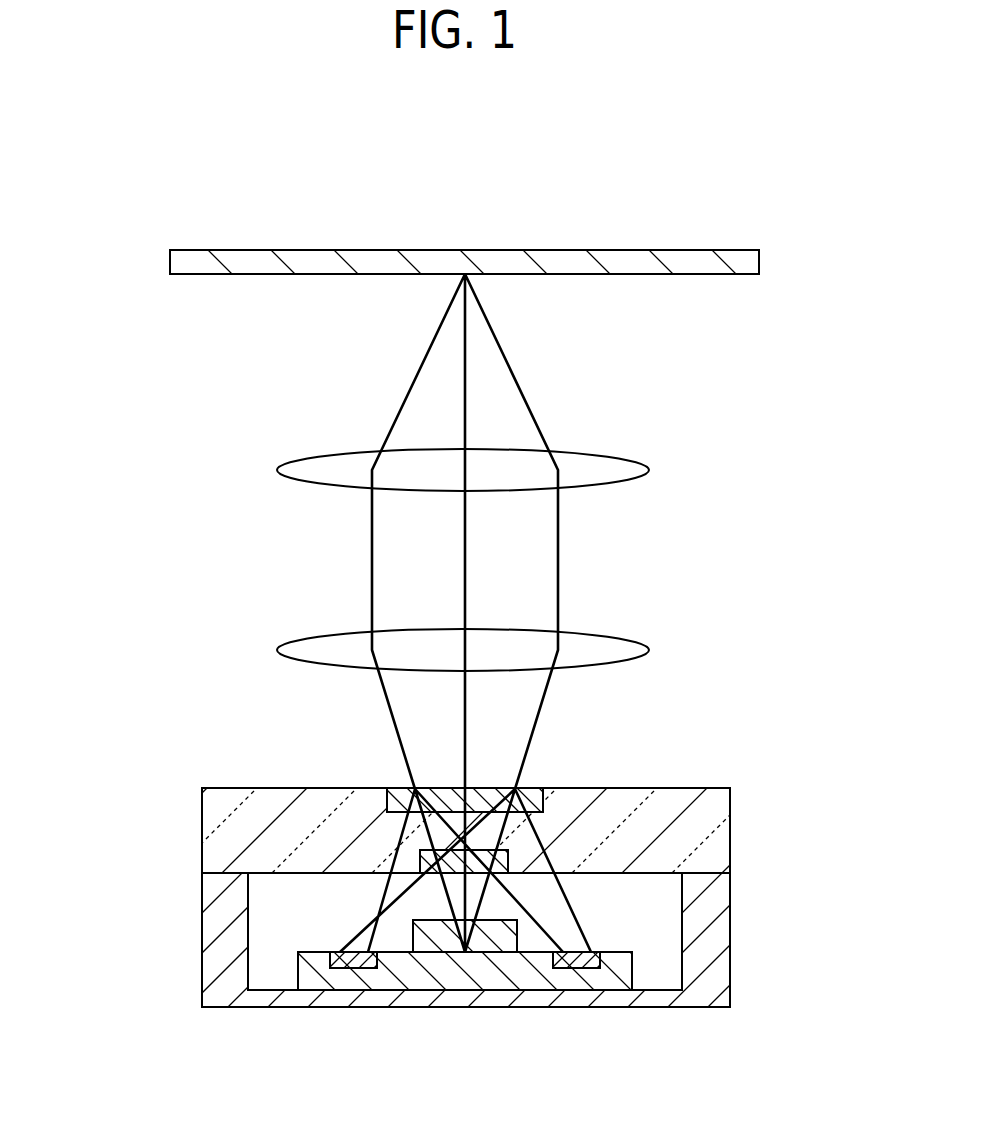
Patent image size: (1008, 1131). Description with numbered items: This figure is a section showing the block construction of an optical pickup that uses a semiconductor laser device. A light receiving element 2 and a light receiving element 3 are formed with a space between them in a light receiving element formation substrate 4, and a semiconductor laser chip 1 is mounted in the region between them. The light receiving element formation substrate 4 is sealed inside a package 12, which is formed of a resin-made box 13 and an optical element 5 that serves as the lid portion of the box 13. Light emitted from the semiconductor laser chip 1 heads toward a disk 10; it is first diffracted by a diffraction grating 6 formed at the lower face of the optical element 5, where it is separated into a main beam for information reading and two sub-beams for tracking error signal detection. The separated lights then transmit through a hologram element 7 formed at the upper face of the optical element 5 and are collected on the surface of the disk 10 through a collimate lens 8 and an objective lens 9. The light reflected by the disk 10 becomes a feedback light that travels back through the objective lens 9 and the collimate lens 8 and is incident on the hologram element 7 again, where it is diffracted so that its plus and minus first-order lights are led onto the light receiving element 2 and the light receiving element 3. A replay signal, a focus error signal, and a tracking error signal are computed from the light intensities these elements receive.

The semiconductor laser chip 1 is at (533, 956).
The light receiving element 2 is at (347, 968).
The light receiving element 3 is at (587, 968).
The light receiving element formation substrate 4 is at (633, 972).
The optical element 5 is at (202, 860).
The diffraction grating 6 is at (508, 856).
The hologram element 7 is at (543, 788).
The collimate lens 8 is at (650, 650).
The objective lens 9 is at (650, 470).
The disk 10 is at (759, 258).
The package 12 is at (506, 897).
The box 13 is at (202, 903).